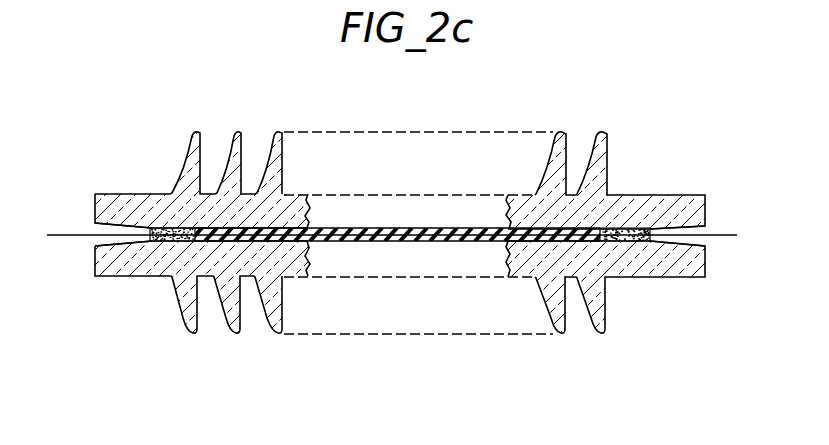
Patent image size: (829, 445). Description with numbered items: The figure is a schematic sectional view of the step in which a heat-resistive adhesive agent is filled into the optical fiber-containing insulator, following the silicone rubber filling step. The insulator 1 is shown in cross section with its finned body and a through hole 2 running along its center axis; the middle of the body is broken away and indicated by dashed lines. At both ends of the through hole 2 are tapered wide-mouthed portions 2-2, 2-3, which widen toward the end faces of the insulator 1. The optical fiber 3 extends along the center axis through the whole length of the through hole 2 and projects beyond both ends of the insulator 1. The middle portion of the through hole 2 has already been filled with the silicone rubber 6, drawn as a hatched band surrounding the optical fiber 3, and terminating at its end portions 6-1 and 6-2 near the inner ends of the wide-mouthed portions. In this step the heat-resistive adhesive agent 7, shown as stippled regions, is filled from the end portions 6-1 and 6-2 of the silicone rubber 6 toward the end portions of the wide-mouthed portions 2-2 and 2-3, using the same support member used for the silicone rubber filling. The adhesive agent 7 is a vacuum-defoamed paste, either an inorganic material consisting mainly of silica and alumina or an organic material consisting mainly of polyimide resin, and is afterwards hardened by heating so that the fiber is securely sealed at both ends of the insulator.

The insulator 1 is at (612, 205).
The through hole 2 is at (405, 229).
The wide-mouthed portion 2-2 is at (663, 230).
The wide-mouthed portion 2-3 is at (130, 229).
The optical fiber 3 is at (67, 234).
The silicone rubber 6 is at (415, 243).
The end portion of silicone rubber 6-1 is at (613, 247).
The end portion of silicone rubber 6-2 is at (170, 243).
The heat-resistive adhesive agent 7 is at (165, 228).